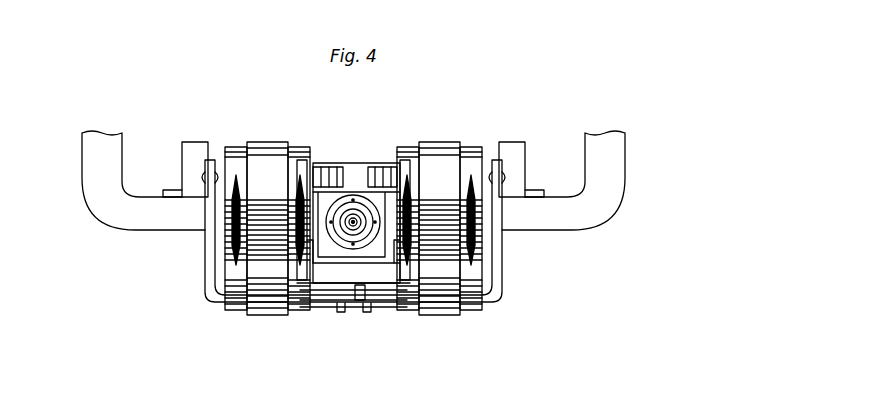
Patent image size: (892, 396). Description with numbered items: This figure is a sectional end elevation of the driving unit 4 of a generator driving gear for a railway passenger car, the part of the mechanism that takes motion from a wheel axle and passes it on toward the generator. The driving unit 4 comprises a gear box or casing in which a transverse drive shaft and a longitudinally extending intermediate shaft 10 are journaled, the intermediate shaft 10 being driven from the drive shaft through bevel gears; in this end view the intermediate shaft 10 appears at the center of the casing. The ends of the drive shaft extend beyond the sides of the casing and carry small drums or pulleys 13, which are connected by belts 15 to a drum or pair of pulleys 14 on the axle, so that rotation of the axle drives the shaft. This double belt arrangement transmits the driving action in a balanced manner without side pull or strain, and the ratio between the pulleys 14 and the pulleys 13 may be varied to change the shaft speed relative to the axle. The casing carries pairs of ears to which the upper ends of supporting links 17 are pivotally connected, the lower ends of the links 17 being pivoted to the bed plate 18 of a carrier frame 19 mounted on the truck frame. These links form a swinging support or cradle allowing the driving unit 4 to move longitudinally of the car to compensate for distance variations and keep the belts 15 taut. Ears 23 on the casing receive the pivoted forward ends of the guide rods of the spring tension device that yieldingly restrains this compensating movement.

The driving unit 4 is at (346, 239).
The intermediate shaft 10 is at (353, 223).
The small drums or pulleys 13 is at (228, 240).
The drum or pulleys on the axle 14 is at (237, 150).
The belts 15 is at (272, 146).
The supporting links 17 is at (312, 258).
The bed plate 18 is at (358, 300).
The carrier frame 19 is at (212, 286).
The ears on the casing 23 is at (334, 167).